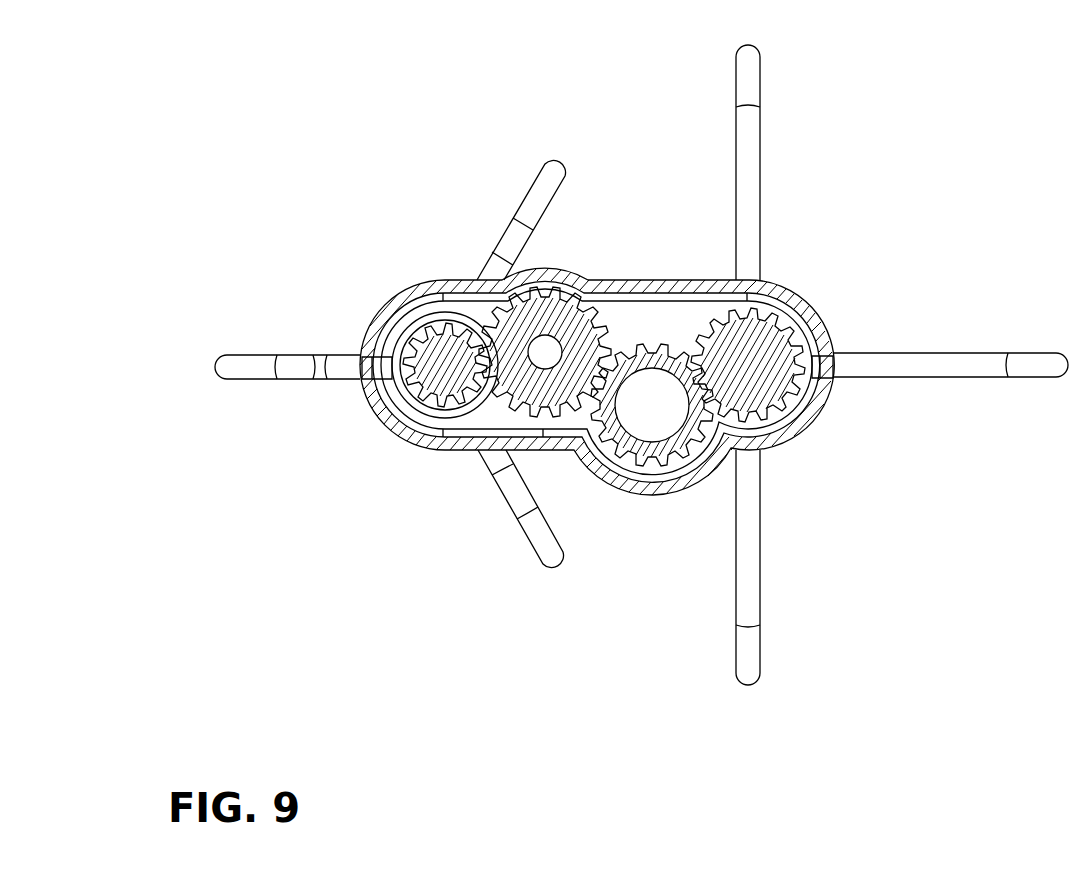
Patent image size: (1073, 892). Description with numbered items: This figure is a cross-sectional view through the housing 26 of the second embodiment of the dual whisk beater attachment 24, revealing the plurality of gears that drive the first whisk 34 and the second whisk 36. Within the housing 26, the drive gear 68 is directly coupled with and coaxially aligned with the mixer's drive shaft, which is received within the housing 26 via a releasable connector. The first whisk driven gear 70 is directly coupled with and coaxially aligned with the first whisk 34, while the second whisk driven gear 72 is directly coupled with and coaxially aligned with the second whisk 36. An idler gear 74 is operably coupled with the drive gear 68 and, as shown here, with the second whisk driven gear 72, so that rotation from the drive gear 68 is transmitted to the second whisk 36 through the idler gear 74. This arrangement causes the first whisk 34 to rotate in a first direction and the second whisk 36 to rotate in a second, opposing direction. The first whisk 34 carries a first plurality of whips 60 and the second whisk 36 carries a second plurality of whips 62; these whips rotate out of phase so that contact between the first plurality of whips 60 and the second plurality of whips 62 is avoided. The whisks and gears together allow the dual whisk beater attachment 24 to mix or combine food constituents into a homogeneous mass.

The dual whisk beater attachment 24 is at (925, 128).
The housing 26 is at (815, 312).
The first whisk 34 is at (745, 508).
The second whisk 36 is at (510, 488).
The first plurality of whips 60 is at (750, 636).
The second plurality of whips 62 is at (263, 367).
The drive gear 68 is at (660, 478).
The first whisk driven gear 70 is at (770, 405).
The second whisk driven gear 72 is at (405, 383).
The idler gear 74 is at (556, 322).